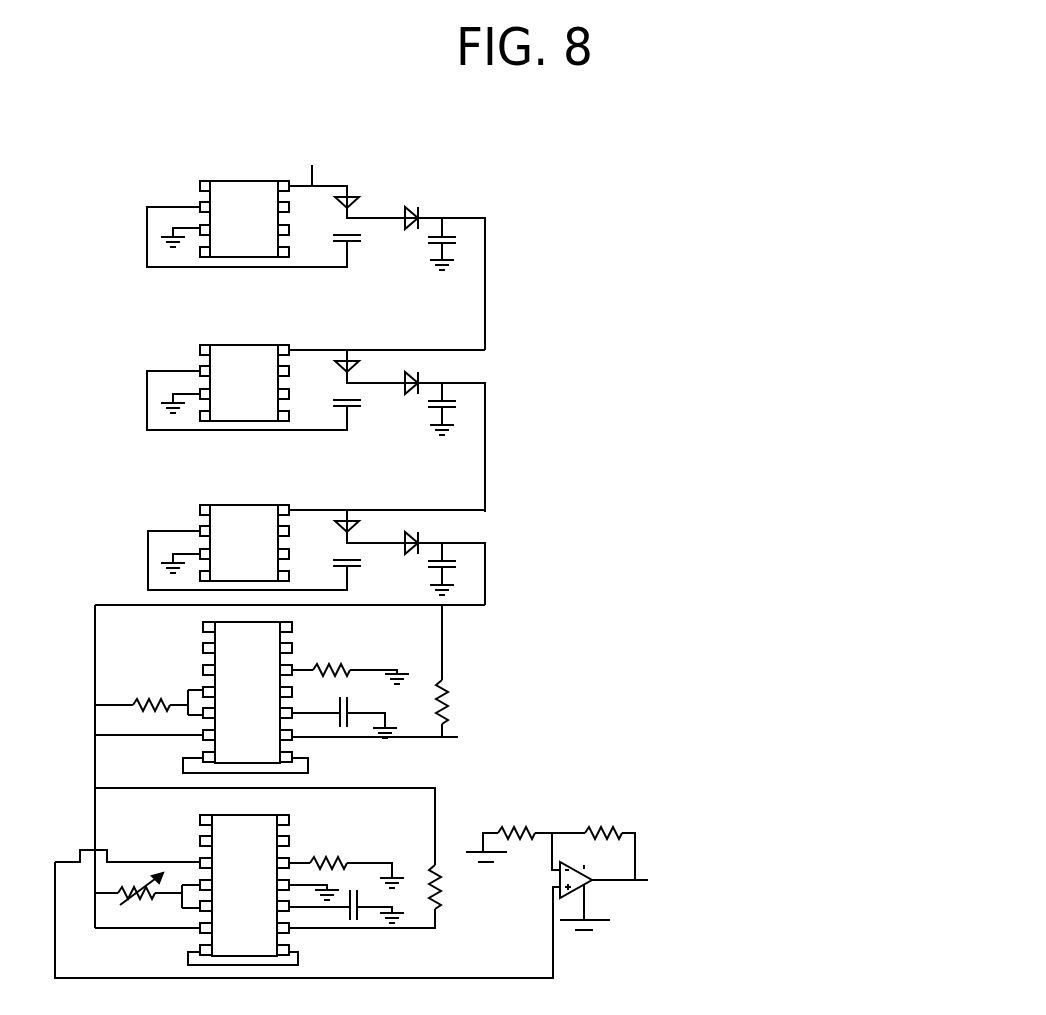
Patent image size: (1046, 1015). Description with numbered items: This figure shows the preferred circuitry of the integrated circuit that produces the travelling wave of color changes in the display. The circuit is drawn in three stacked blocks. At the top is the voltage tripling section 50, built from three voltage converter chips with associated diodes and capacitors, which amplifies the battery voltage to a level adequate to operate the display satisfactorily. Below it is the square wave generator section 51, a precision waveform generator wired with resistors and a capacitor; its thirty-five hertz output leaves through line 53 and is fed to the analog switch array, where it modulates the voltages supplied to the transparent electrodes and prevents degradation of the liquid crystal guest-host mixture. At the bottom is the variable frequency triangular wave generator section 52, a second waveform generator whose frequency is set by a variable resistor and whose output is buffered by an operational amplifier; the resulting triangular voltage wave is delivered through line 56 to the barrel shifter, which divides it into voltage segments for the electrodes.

The voltage tripling section 50 is at (487, 154).
The square wave generator section 51 is at (494, 766).
The variable frequency triangular wave generator section 52 is at (479, 883).
The line 53 is at (458, 737).
The line 56 is at (643, 880).